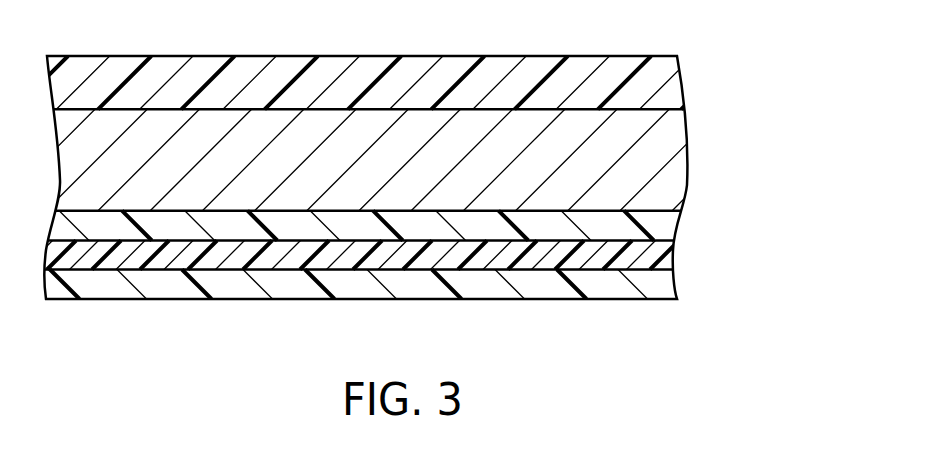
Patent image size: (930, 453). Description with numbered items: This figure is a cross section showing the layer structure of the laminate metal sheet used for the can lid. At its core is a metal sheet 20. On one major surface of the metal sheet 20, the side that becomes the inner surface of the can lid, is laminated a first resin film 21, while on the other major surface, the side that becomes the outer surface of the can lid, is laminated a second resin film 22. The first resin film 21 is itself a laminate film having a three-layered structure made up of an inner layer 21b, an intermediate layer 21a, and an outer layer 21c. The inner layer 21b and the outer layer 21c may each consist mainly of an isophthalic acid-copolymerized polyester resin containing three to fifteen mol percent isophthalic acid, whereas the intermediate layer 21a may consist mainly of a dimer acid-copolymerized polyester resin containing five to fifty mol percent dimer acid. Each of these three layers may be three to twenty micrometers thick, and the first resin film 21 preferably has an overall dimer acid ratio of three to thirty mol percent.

The metal sheet 20 is at (667, 159).
The first resin film 21 is at (418, 255).
The intermediate layer 21a is at (667, 256).
The inner layer 21b is at (667, 228).
The outer layer 21c is at (372, 283).
The second resin film 22 is at (676, 84).